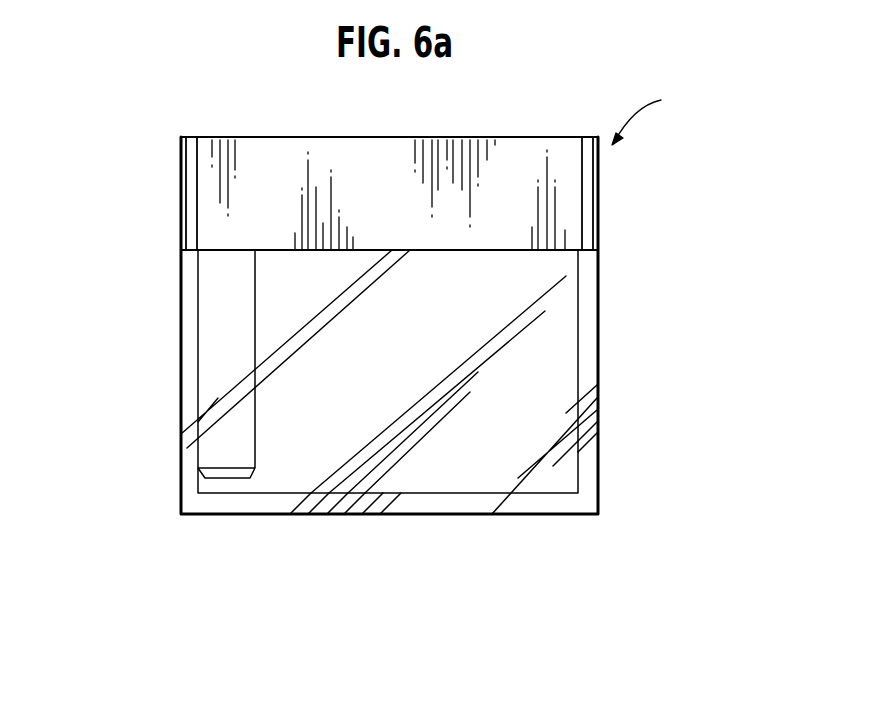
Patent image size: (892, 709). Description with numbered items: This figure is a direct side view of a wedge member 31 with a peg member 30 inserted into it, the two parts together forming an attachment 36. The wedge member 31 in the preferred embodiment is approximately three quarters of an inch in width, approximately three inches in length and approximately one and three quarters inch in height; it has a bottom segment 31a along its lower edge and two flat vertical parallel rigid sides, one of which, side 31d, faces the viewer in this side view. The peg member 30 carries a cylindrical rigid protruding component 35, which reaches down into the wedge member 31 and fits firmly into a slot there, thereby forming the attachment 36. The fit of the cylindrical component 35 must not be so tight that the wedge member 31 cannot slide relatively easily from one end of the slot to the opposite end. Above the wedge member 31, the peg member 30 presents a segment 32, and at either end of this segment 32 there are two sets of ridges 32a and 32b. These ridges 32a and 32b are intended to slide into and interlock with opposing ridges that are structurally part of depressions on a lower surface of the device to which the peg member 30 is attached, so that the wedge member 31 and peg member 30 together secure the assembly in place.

The peg member 30 is at (268, 137).
The segment 32 is at (418, 137).
The ridges 32a is at (601, 190).
The ridges 32b is at (182, 198).
The attachment 36 is at (656, 112).
The cylindrical rigid protruding component 35 is at (198, 336).
The wedge member 31 is at (562, 514).
The bottom segment 31a is at (283, 514).
The flat vertical parallel rigid side 31d is at (440, 480).